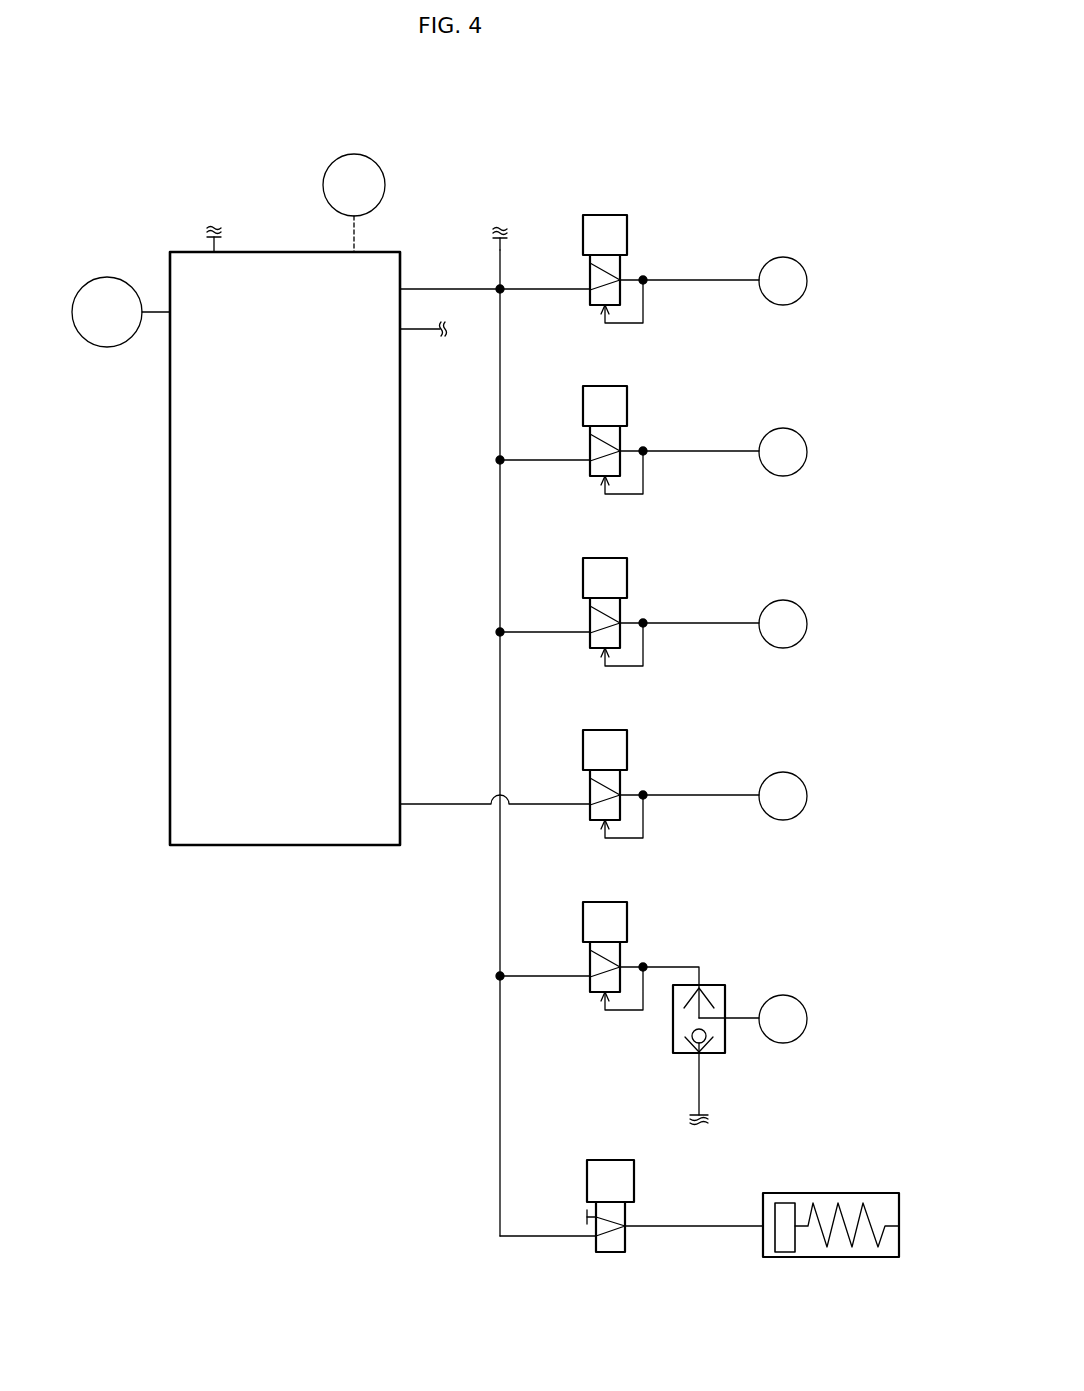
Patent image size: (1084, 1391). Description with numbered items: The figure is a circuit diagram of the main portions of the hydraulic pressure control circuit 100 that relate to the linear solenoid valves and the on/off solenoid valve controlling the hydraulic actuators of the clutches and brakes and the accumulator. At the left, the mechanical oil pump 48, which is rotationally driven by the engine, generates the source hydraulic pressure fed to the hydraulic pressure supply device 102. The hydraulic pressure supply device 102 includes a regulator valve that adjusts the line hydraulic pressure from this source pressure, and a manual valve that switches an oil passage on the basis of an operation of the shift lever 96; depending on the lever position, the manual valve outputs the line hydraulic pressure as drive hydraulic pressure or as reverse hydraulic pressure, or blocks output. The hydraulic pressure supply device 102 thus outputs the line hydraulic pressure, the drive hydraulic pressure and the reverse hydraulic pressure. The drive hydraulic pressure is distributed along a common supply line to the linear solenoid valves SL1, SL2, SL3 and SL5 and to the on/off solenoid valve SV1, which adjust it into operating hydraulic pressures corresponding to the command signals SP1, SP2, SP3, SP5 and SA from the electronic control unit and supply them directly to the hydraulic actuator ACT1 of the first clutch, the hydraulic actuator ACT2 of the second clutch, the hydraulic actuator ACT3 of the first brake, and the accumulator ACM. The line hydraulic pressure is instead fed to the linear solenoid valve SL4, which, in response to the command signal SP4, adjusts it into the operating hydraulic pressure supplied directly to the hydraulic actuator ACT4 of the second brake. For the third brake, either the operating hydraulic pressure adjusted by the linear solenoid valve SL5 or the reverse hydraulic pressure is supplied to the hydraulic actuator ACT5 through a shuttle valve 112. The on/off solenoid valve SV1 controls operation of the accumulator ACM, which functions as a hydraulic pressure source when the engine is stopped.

The mechanical oil pump 48 is at (110, 287).
The shift lever 96 is at (362, 179).
The hydraulic pressure control circuit 100 is at (511, 136).
The hydraulic pressure supply device 102 is at (271, 199).
The shuttle valve 112 is at (713, 992).
The linear solenoid valve SL1 is at (610, 222).
The linear solenoid valve SL2 is at (610, 393).
The linear solenoid valve SL3 is at (610, 565).
The linear solenoid valve SL4 is at (610, 737).
The linear solenoid valve SL5 is at (610, 909).
The on/off solenoid valve SV1 is at (613, 1167).
The hydraulic actuator ACT1 is at (782, 268).
The hydraulic actuator ACT2 is at (782, 439).
The hydraulic actuator ACT3 is at (782, 611).
The hydraulic actuator ACT4 is at (782, 783).
The hydraulic actuator ACT5 is at (782, 1004).
The accumulator ACM is at (785, 1192).
The command signal SP1 is at (558, 188).
The command signal SP2 is at (558, 359).
The command signal SP3 is at (558, 531).
The command signal SP4 is at (558, 703).
The command signal SP5 is at (558, 875).
The command signal SA is at (568, 1132).